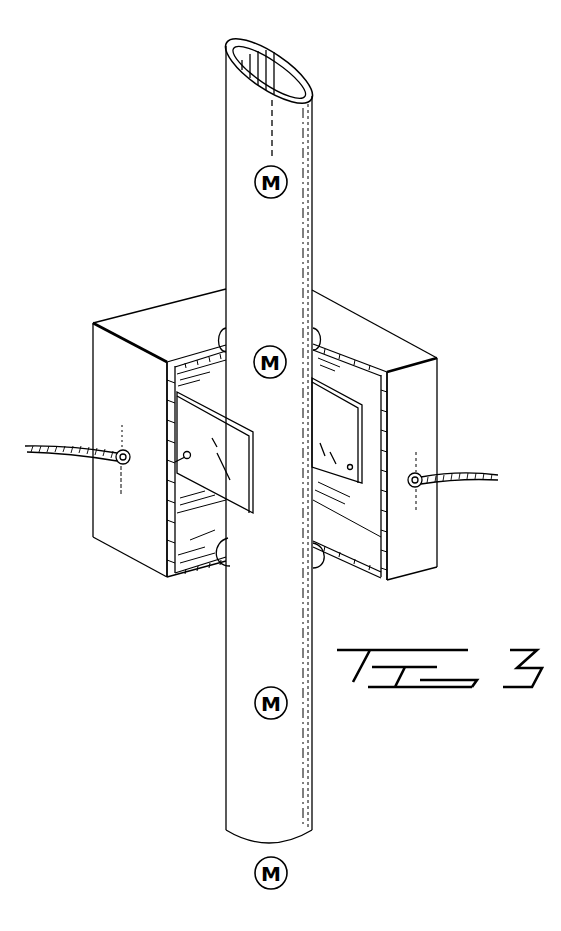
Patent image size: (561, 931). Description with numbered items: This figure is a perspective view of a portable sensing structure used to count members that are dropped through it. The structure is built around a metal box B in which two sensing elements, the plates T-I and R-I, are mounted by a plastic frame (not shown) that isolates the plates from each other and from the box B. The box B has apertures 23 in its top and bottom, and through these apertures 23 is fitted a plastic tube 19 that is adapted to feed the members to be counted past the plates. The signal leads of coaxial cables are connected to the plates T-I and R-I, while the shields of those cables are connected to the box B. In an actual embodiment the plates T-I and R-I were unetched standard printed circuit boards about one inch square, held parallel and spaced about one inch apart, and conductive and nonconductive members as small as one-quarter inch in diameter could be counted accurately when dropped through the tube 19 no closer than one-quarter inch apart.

The plastic tube 19 is at (305, 609).
The apertures 23 is at (226, 330).
The metal box B is at (370, 337).
The sensing element plate R-I is at (190, 422).
The sensing element plate T-I is at (352, 424).